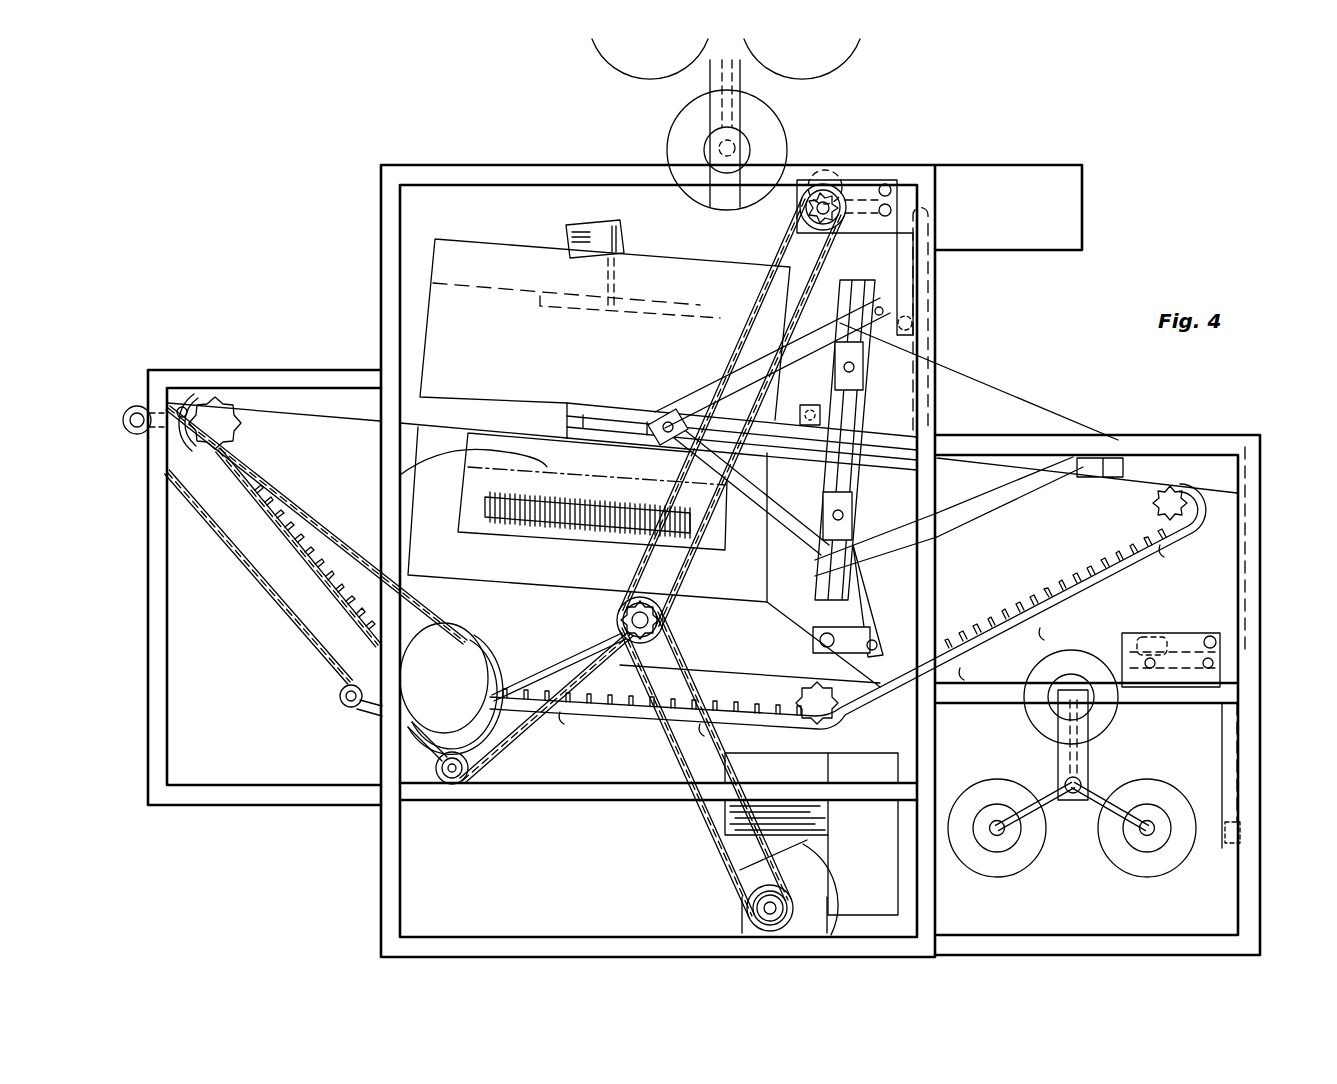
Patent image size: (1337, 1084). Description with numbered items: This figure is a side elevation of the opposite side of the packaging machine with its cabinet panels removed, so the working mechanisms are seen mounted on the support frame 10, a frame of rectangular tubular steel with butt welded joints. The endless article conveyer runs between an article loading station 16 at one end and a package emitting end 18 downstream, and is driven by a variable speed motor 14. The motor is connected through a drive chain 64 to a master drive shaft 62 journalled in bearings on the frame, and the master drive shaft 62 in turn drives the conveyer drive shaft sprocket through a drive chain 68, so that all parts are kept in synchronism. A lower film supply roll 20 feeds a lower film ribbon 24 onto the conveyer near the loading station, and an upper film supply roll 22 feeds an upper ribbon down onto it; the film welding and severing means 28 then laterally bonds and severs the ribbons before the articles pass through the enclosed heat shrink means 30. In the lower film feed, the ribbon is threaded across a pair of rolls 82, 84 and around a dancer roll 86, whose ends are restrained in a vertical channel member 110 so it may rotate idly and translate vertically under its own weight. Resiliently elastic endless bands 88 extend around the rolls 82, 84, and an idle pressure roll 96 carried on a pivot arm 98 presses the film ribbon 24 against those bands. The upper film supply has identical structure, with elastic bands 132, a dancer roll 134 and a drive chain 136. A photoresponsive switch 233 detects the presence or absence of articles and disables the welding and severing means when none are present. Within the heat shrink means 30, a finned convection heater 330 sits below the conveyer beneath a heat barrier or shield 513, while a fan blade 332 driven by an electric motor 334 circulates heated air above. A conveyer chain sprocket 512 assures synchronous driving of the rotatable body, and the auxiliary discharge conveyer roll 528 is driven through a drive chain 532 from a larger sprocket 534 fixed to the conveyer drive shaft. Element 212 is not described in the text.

The support frame 10 is at (920, 955).
The variable speed motor 14 is at (846, 858).
The article loading station 16 is at (1125, 423).
The package emitting end 18 is at (229, 359).
The lower film supply roll 20 is at (1070, 665).
The upper film supply roll 22 is at (787, 138).
The lower film ribbon 24 is at (1260, 572).
The film welding and severing means 28 is at (862, 378).
The heat shrink means 30 is at (484, 362).
The master drive shaft 62 is at (628, 620).
The drive chain 64 is at (722, 860).
The drive chain 68 is at (478, 763).
The roll 82 is at (1150, 668).
The roll 84 is at (1208, 668).
The dancer roll 86 is at (1240, 826).
The endless bands 88 is at (1165, 638).
The pressure roll 96 is at (1150, 637).
The pivot arm 98 is at (1220, 643).
The vertical channel member 110 is at (1222, 848).
The elastic bands 132 is at (862, 222).
The dancer roll 134 is at (912, 322).
The drive chain 136 is at (790, 245).
The cleated conveyor 212 is at (1085, 570).
The photoresponsive switch 233 is at (810, 405).
The convection type heater 330 is at (558, 522).
The fan blade 332 is at (556, 300).
The electric motor 334 is at (620, 245).
The conveyer chain sprocket 512 is at (242, 430).
The heat barrier or shield 513 is at (470, 456).
The roll 528 is at (125, 422).
The drive chain 532 is at (270, 607).
The sprocket 534 is at (458, 682).